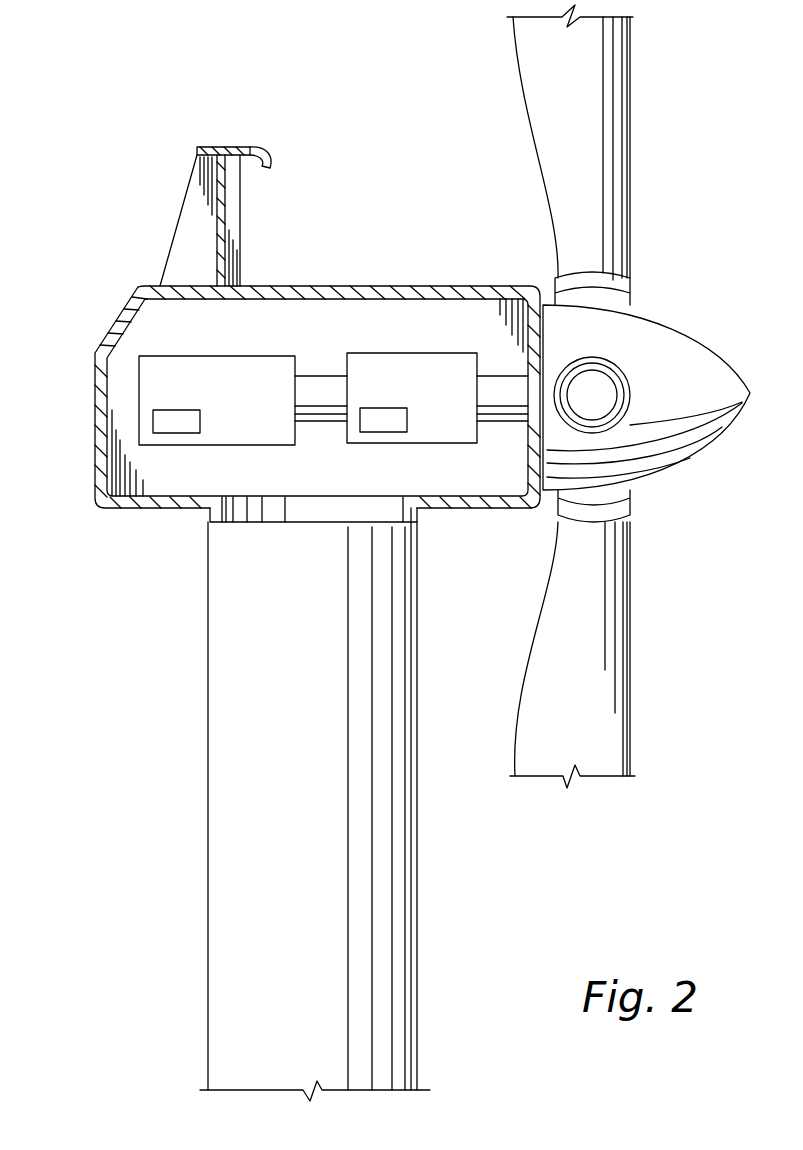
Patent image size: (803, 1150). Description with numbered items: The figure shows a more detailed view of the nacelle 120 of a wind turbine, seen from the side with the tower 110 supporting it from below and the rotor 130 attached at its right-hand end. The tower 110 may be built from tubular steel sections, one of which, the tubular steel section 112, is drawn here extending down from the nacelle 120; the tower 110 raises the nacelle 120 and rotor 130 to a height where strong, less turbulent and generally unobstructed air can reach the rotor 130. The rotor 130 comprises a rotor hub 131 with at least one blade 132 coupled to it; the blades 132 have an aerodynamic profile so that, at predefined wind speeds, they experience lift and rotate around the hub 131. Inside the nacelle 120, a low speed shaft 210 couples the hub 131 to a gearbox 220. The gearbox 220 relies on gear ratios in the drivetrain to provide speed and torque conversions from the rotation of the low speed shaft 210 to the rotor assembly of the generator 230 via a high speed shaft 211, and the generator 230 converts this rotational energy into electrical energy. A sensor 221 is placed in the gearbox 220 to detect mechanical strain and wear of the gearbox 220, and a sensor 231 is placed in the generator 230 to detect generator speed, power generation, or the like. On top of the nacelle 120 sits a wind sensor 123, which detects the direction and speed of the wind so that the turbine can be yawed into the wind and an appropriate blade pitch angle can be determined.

The tower 110 is at (183, 883).
The tubular steel section 112 is at (208, 710).
The nacelle 120 is at (103, 291).
The wind sensor 123 is at (212, 146).
The rotor 130 is at (697, 476).
The rotor hub 131 is at (677, 325).
The blade 132 is at (632, 118).
The low speed shaft 210 is at (485, 423).
The high speed shaft 211 is at (305, 423).
The gearbox 220 is at (407, 353).
The sensor 221 is at (407, 420).
The generator 230 is at (228, 356).
The sensor 231 is at (200, 421).